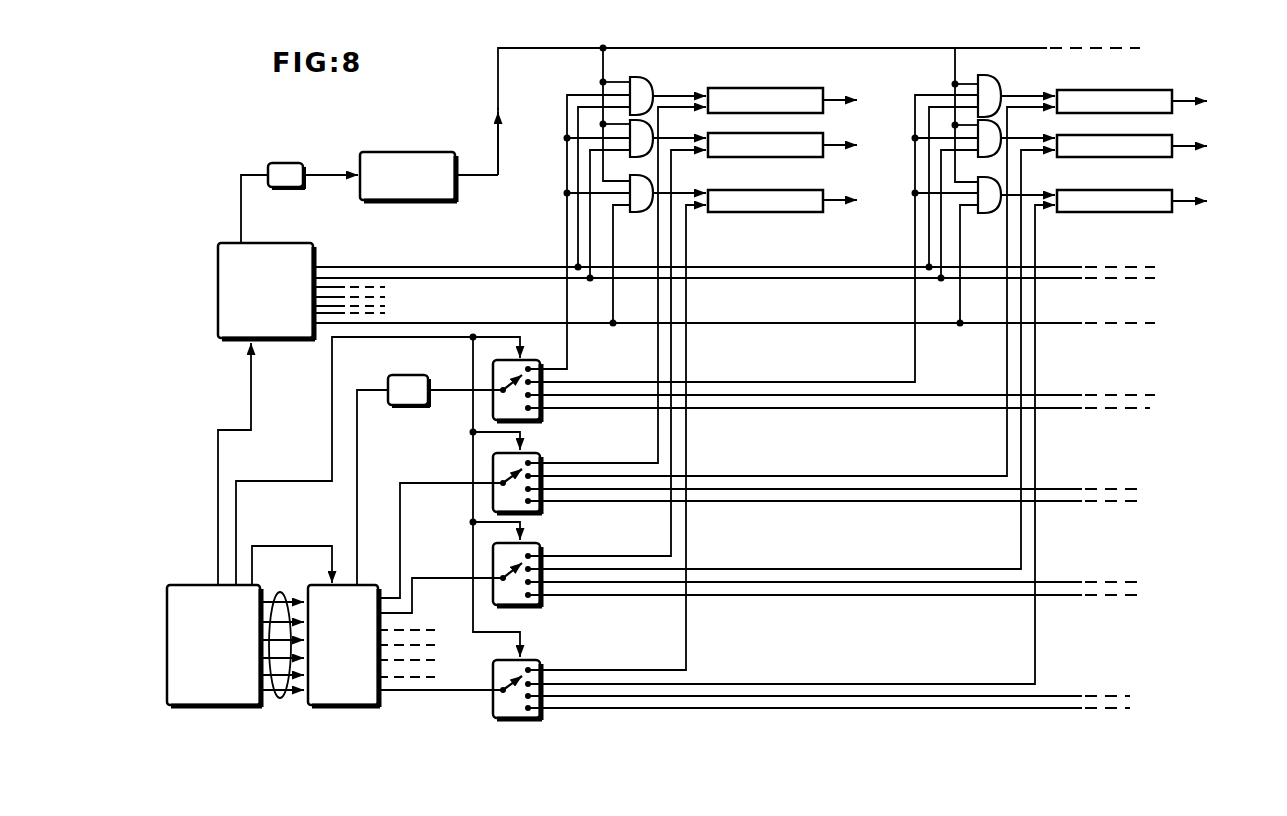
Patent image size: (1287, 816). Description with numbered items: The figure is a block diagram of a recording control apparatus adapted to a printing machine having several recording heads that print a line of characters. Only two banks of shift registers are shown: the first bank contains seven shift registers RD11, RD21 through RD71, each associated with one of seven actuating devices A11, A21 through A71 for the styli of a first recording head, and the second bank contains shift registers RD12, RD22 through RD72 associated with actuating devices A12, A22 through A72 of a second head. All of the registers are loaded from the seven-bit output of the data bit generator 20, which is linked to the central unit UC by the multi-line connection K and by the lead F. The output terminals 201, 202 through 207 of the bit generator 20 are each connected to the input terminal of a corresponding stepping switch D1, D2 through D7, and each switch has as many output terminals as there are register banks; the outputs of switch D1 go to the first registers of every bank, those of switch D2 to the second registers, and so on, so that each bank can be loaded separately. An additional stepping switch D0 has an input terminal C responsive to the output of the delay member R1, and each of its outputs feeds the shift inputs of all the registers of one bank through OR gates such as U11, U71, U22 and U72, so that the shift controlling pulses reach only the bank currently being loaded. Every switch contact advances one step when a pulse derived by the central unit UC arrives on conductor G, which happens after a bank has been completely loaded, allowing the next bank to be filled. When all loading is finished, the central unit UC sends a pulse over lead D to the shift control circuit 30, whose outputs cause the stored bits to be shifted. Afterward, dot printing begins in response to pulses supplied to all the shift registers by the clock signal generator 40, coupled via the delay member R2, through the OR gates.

The shift control circuit 30 is at (287, 243).
The clock signal generator 40 is at (394, 204).
The data bit generator 20 is at (366, 594).
The output terminal of bit generator 201 is at (448, 484).
The output terminal of bit generator 202 is at (455, 578).
The output terminal of bit generator 207 is at (460, 690).
The delay member R1 is at (401, 406).
The delay member R2 is at (290, 163).
The central unit UC is at (210, 585).
The data link between central unit and bit generator K is at (282, 631).
The lead D is at (257, 383).
The conductor G is at (284, 480).
The lead F is at (284, 549).
The input terminal C is at (493, 385).
The stepping switch D0 is at (523, 365).
The stepping switch D1 is at (523, 459).
The stepping switch D2 is at (523, 549).
The stepping switch D7 is at (523, 666).
The OR gate U11 is at (651, 94).
The OR gate U71 is at (643, 212).
The OR gate U22 is at (983, 152).
The OR gate U72 is at (981, 213).
The shift register RD11 is at (752, 98).
The shift register RD21 is at (746, 146).
The shift register RD71 is at (748, 203).
The shift register RD12 is at (1151, 100).
The shift register RD22 is at (1081, 147).
The shift register RD72 is at (1088, 210).
The actuating device A11 is at (866, 101).
The actuating device A21 is at (863, 146).
The actuating device A71 is at (863, 200).
The actuating device A12 is at (1212, 102).
The actuating device A22 is at (1212, 147).
The actuating device A72 is at (1212, 201).